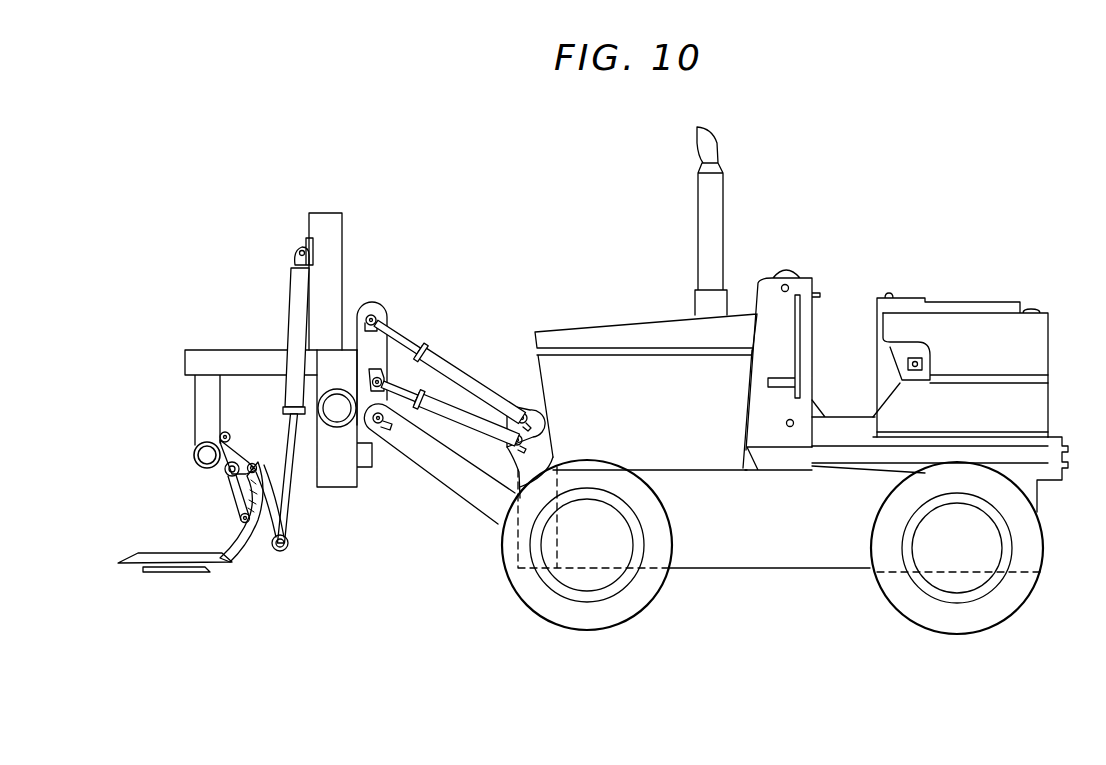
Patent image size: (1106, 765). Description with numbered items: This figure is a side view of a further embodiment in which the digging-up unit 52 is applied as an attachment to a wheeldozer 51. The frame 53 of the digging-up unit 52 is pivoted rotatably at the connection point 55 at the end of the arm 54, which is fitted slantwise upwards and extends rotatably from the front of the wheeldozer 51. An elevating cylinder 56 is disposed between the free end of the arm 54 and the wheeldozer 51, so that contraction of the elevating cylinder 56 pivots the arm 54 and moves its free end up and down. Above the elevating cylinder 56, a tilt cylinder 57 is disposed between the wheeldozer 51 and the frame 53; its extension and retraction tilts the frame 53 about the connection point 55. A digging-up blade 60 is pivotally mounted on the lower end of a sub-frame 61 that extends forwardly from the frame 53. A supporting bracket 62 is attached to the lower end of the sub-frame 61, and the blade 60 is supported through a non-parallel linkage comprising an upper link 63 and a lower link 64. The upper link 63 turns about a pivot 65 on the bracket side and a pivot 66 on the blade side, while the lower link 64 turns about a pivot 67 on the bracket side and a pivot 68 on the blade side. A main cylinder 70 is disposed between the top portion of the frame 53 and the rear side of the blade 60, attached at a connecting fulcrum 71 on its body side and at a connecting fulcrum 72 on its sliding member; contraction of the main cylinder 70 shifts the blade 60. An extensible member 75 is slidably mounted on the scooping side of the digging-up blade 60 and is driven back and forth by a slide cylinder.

The wheeldozer 51 is at (712, 380).
The digging-up unit 52 is at (256, 400).
The frame 53 is at (330, 273).
The arm 54 is at (445, 473).
The connection point 55 is at (378, 433).
The elevating cylinder 56 is at (450, 413).
The tilt cylinder 57 is at (445, 355).
The digging-up blade 60 is at (250, 553).
The sub-frame 61 is at (215, 357).
The supporting bracket 62 is at (200, 466).
The upper link 63 is at (235, 447).
The lower link 64 is at (233, 495).
The pivot of the upper link 65 is at (227, 432).
The pivot of the upper link 66 is at (258, 468).
The pivot of the lower link 67 is at (223, 472).
The pivot of the lower link 68 is at (242, 520).
The main cylinder 70 is at (293, 318).
The connecting fulcrum 71 is at (300, 248).
The connecting fulcrum 72 is at (285, 550).
The extensible member 75 is at (143, 572).